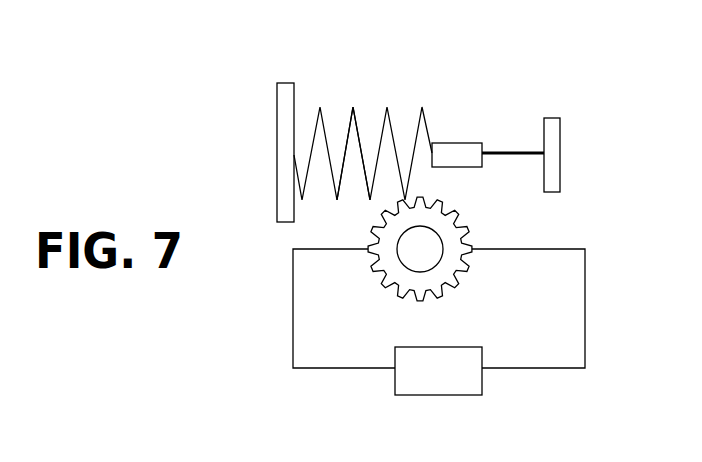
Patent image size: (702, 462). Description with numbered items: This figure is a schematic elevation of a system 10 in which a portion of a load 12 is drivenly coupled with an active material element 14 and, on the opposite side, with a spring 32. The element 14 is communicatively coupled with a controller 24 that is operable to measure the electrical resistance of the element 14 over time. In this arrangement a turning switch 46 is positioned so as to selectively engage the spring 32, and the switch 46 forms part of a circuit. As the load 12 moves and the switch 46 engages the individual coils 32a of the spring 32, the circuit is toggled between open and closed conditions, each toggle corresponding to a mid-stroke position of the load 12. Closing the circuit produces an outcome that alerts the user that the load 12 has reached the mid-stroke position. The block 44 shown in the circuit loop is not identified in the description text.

The system 10 is at (240, 66).
The spring 32 is at (402, 93).
The coil 32a is at (353, 107).
The load 12 is at (455, 143).
The active material element 14 is at (513, 153).
The controller 24 is at (560, 150).
The turning switch 46 is at (383, 282).
The controller 44 is at (456, 385).